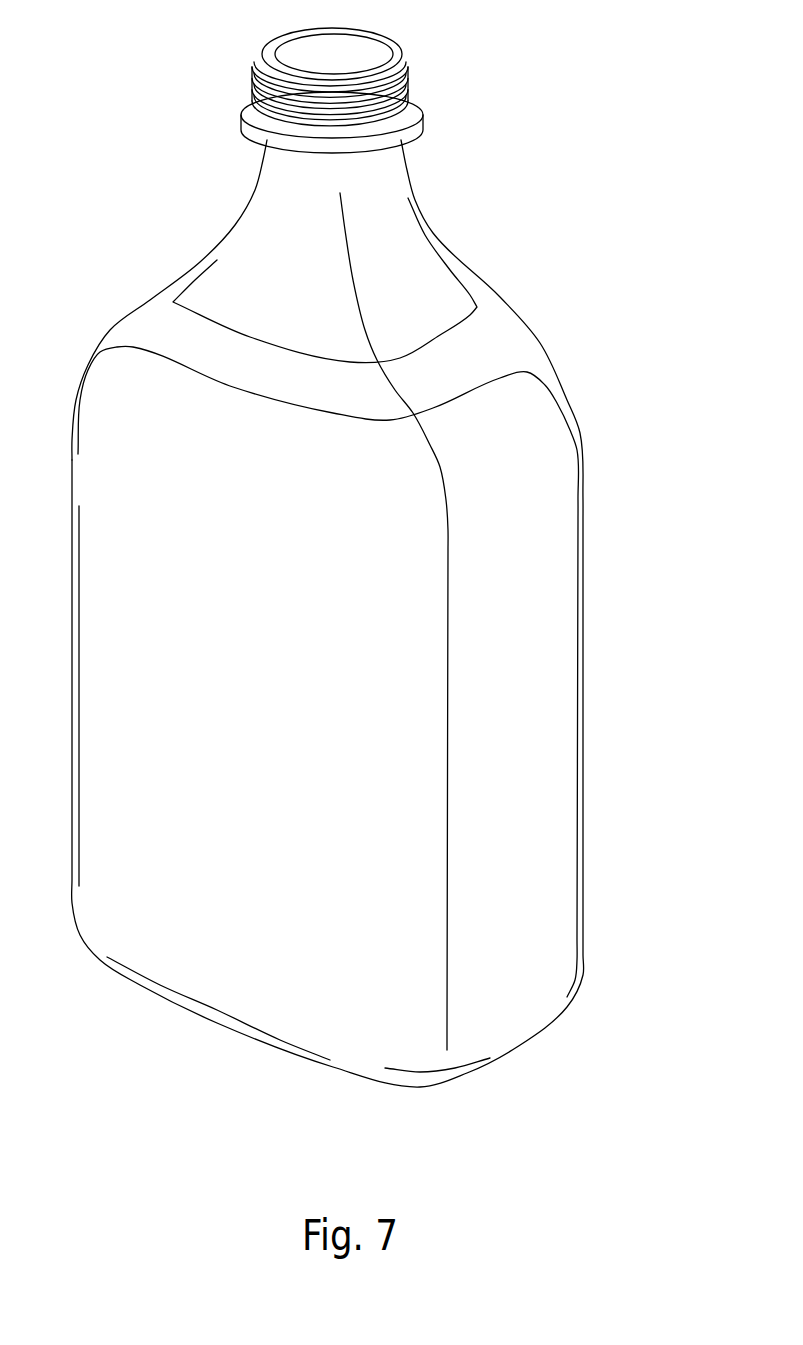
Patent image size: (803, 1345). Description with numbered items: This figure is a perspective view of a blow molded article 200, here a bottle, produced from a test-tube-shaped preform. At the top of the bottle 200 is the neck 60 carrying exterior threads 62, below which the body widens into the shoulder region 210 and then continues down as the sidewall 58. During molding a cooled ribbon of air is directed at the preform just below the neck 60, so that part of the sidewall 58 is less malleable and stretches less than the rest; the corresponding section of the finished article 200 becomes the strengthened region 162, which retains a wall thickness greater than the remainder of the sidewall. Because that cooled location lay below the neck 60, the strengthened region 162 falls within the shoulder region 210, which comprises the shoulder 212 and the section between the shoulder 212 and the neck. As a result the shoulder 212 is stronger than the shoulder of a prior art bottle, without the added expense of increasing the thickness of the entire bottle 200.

The sidewall 58 is at (548, 767).
The neck 60 is at (268, 75).
The exterior threads 62 is at (398, 72).
The strengthened region 162 is at (150, 322).
The blow molded article 200 is at (518, 283).
The shoulder region 210 is at (543, 318).
The shoulder 212 is at (577, 418).